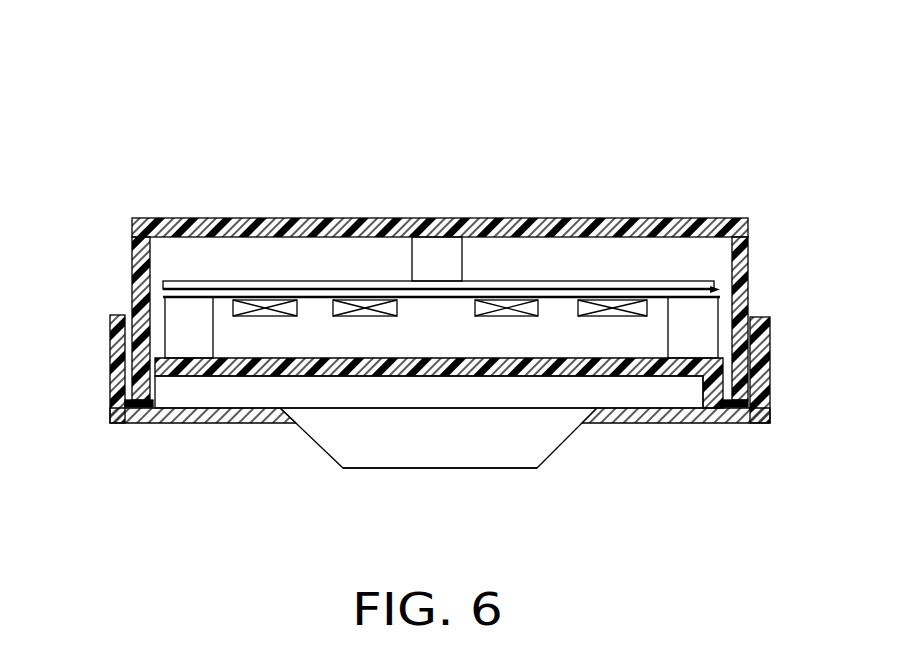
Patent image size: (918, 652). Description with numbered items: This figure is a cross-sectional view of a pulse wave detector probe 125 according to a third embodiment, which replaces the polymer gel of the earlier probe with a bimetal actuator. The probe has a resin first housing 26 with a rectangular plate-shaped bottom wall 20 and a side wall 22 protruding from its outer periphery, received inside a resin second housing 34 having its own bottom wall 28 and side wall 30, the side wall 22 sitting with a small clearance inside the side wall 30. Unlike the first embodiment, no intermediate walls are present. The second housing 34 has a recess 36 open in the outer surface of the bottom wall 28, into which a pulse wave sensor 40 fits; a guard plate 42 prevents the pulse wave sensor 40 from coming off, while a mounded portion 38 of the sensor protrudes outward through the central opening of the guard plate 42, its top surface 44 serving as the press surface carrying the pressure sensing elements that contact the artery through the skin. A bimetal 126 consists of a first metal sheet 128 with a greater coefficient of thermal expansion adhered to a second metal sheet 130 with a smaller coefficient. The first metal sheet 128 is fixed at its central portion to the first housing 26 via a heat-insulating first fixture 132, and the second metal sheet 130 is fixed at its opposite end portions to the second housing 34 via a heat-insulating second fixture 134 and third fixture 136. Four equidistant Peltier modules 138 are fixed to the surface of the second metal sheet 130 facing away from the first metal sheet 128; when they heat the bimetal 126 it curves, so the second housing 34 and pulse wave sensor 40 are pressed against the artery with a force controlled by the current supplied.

The pulse wave detector probe 125 is at (240, 84).
The bottom wall 20 is at (215, 228).
The side wall 22 is at (138, 280).
The first housing 26 is at (772, 208).
The bottom wall 28 is at (138, 413).
The side wall 30 is at (118, 370).
The second housing 34 is at (786, 440).
The recess 36 is at (243, 378).
The mounded portion 38 is at (393, 447).
The pulse wave sensor 40 is at (543, 490).
The guard plate 42 is at (637, 413).
The top surface 44 is at (462, 468).
The bimetal 126 is at (566, 262).
The first metal sheet 128 is at (720, 283).
The second metal sheet 130 is at (720, 298).
The first fixture 132 is at (442, 253).
The second fixture 134 is at (188, 340).
The third fixture 136 is at (690, 343).
The Peltier modules 138 is at (260, 317).